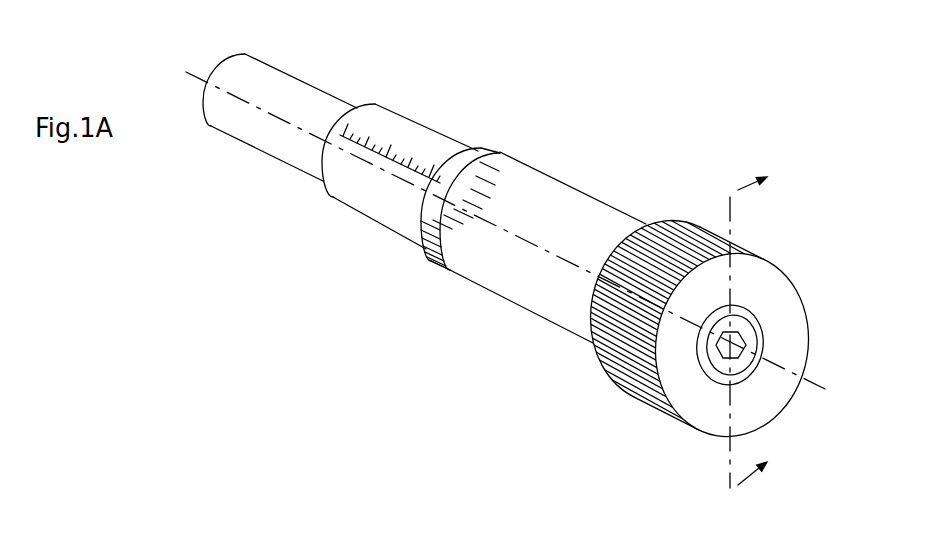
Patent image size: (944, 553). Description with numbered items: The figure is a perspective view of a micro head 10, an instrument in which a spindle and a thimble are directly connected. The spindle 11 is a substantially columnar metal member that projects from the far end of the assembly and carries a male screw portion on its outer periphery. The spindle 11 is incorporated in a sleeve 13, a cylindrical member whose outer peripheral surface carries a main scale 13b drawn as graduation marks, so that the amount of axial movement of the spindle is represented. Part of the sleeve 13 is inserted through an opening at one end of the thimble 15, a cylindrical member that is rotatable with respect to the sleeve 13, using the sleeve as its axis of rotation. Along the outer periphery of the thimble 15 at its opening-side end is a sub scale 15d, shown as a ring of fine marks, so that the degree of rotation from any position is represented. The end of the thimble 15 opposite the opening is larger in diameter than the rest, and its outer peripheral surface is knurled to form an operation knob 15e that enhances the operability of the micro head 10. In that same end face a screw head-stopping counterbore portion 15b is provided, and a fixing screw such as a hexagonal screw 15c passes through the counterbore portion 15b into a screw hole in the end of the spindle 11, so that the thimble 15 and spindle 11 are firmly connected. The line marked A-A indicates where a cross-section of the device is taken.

The micro head 10 is at (533, 97).
The spindle 11 is at (258, 128).
The sleeve 13 is at (400, 176).
The main scale 13b is at (418, 150).
The thimble 15 is at (622, 329).
The counterbore portion 15b is at (712, 383).
The hexagonal screw 15c is at (758, 318).
The sub scale 15d is at (440, 263).
The operation knob 15e is at (598, 402).